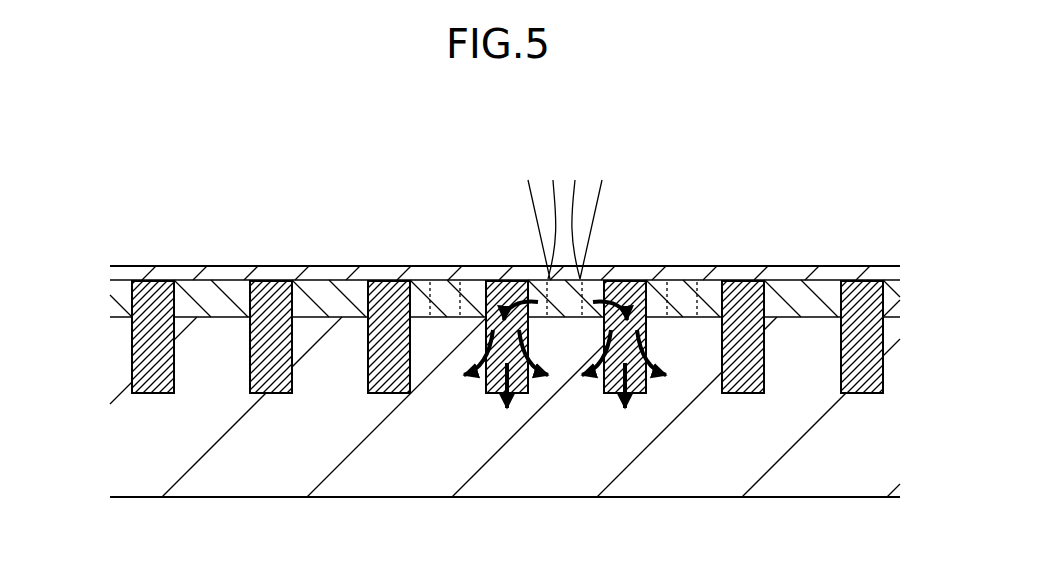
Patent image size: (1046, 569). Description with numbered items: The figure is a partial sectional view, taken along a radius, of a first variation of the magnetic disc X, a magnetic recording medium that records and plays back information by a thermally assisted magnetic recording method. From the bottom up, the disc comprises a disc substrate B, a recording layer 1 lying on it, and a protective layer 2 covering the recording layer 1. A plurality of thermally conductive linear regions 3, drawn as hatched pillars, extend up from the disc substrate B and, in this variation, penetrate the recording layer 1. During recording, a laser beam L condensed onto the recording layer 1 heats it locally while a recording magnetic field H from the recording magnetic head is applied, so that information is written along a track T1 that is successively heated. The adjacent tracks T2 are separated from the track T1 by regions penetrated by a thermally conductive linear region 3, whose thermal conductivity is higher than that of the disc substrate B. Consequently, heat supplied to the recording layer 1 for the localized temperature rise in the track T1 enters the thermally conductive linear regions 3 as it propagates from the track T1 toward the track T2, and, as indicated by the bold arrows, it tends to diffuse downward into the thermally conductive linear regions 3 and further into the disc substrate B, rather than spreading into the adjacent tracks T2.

The magnetic disc X is at (134, 246).
The recording layer 1 is at (205, 308).
The protective layer 2 is at (336, 276).
The thermally conductive linear regions 3 is at (145, 340).
The disc substrate B is at (205, 470).
The recording magnetic field H is at (560, 203).
The laser beam L is at (597, 195).
The track T1 is at (572, 308).
The adjacent tracks T2 is at (440, 305).